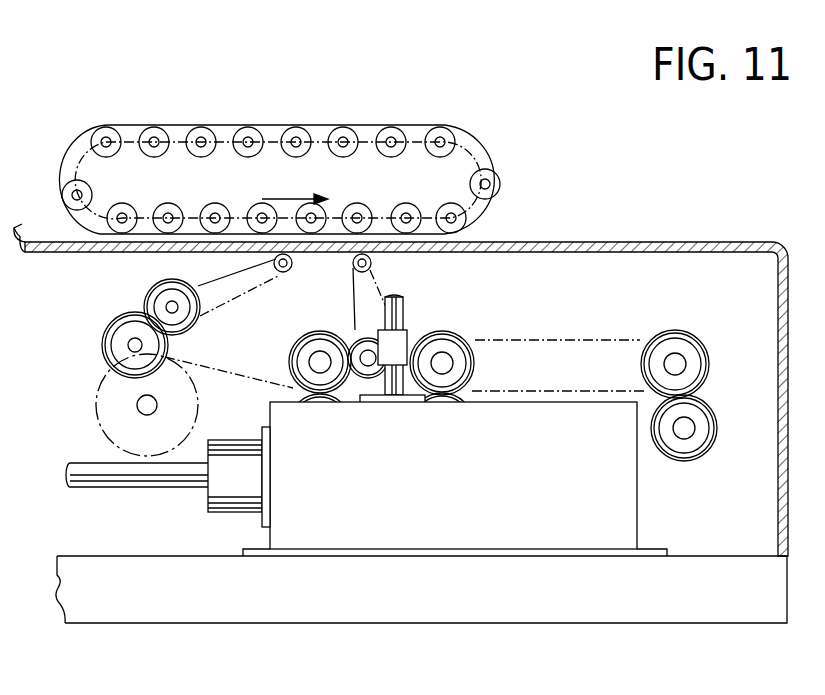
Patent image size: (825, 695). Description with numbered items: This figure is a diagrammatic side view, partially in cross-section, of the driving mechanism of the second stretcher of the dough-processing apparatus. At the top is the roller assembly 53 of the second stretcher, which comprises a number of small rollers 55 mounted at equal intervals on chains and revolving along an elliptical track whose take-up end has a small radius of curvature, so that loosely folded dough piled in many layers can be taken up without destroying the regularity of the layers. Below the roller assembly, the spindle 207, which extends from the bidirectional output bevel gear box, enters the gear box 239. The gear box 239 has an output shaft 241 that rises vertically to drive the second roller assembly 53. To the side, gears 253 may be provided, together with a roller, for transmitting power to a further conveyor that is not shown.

The roller assembly 53 is at (413, 126).
The small rollers 55 is at (155, 137).
The output shaft 241 is at (399, 307).
The gear box 239 is at (473, 495).
The spindle 207 is at (140, 478).
The gears 253 is at (778, 364).